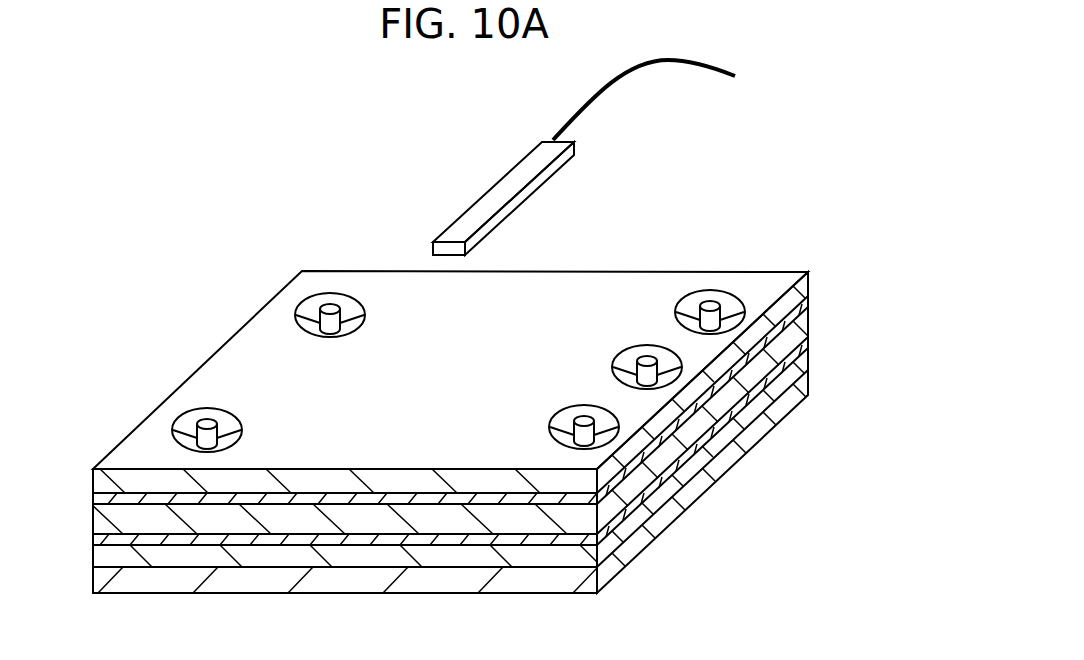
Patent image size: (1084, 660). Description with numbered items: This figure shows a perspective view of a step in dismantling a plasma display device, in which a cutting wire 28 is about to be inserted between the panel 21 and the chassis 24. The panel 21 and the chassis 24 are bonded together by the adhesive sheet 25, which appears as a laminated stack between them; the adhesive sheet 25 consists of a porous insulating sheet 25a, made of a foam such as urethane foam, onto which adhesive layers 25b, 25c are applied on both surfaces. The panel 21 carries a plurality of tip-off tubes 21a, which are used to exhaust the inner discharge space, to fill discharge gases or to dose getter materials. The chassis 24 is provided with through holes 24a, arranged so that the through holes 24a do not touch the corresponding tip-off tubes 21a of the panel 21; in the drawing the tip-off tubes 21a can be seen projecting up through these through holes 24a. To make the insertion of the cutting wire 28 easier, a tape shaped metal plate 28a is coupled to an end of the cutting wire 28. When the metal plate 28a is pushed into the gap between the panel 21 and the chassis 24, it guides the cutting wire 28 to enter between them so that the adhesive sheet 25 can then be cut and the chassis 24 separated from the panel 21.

The panel 21 is at (520, 583).
The tip-off tubes 21a is at (207, 417).
The chassis 24 is at (628, 278).
The through holes 24a is at (733, 302).
The adhesive sheet 25 is at (835, 317).
The porous insulating sheet 25a is at (757, 437).
The adhesive layer 25b is at (668, 518).
The adhesive layer 25c is at (767, 398).
The cutting wire 28 is at (590, 104).
The tape shaped metal plate 28a is at (495, 197).